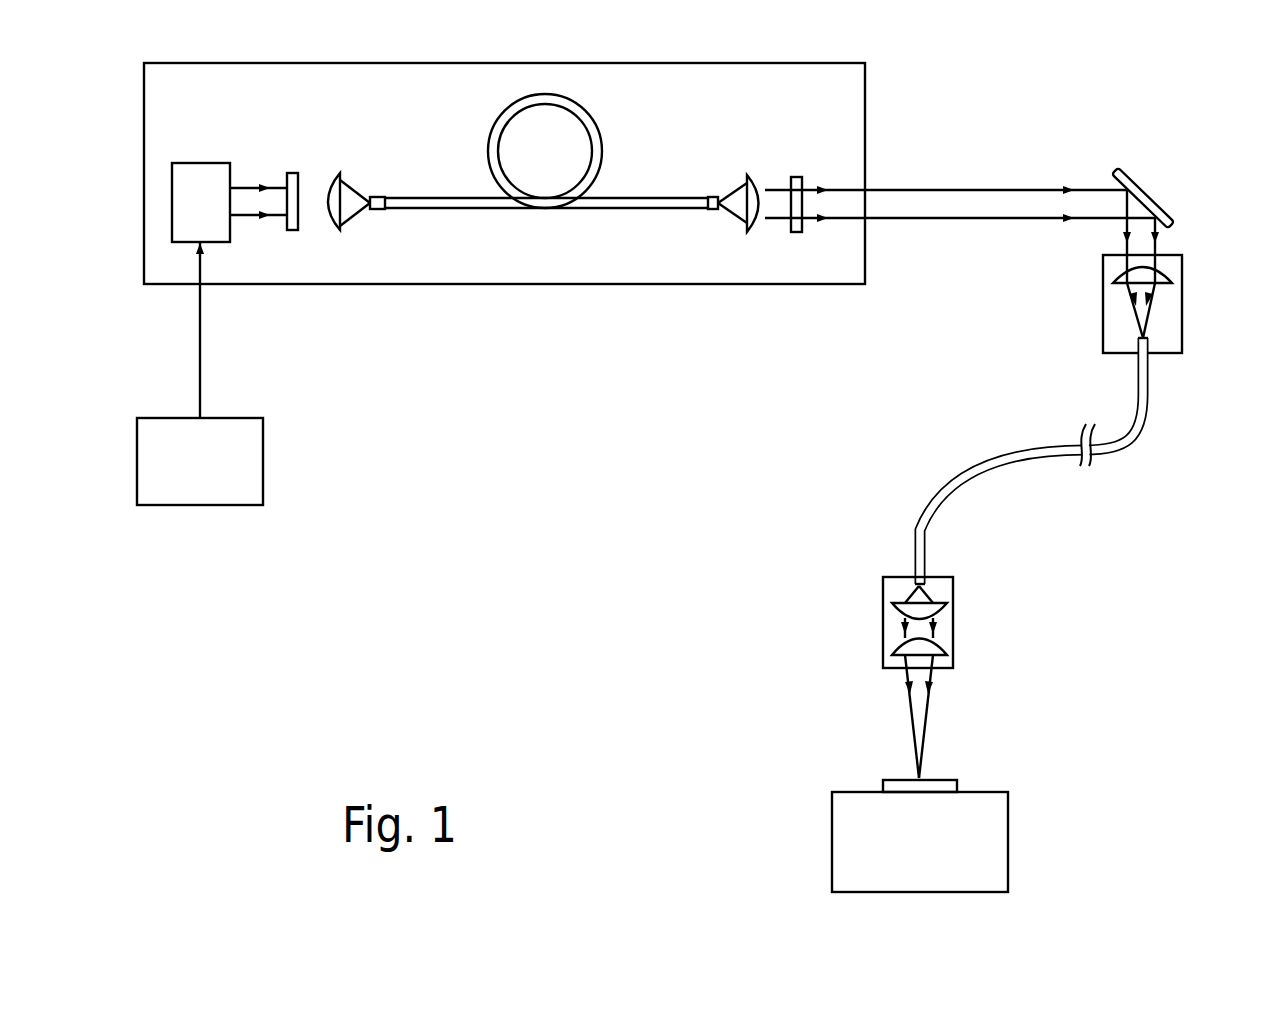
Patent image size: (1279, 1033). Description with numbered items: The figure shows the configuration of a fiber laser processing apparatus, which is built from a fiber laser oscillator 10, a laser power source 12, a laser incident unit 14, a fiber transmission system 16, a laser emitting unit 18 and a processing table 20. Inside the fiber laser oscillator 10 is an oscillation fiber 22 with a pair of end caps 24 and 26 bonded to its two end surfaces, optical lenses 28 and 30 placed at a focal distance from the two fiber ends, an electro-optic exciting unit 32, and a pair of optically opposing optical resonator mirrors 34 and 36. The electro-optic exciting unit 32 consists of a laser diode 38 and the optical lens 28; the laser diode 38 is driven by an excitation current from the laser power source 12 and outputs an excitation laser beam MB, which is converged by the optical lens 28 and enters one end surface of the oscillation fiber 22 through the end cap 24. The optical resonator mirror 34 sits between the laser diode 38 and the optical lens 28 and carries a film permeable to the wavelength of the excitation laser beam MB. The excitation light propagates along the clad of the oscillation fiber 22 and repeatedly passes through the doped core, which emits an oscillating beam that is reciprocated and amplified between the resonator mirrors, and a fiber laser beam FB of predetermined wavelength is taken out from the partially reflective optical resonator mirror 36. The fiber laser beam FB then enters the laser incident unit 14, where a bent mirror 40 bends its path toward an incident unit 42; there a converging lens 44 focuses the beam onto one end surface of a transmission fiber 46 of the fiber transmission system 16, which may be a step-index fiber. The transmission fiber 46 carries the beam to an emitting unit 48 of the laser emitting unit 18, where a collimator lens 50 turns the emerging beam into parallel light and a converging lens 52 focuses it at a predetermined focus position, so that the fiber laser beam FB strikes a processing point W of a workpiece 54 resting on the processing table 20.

The fiber laser oscillator 10 is at (458, 312).
The laser power source 12 is at (263, 462).
The laser incident unit 14 is at (1175, 236).
The fiber transmission system 16 is at (1018, 461).
The laser emitting unit 18 is at (902, 610).
The processing table 20 is at (1008, 855).
The oscillation fiber 22 is at (596, 120).
The end cap 24 is at (378, 211).
The end cap 26 is at (712, 211).
The optical lens 28 is at (339, 173).
The optical lens 30 is at (745, 176).
The electro-optic exciting unit 32 is at (288, 286).
The optical resonator mirror 34 is at (292, 173).
The optical resonator mirror 36 is at (797, 177).
The laser diode 38 is at (200, 163).
The bent mirror 40 is at (1123, 168).
The incident unit 42 is at (1182, 345).
The converging lens 44 is at (1168, 285).
The transmission fiber 46 is at (913, 505).
The emitting unit 48 is at (883, 600).
The collimator lens 50 is at (940, 605).
The converging lens 52 is at (947, 645).
The workpiece 54 is at (890, 779).
The excitation laser beam MB is at (252, 220).
The fiber laser beam FB is at (836, 220).
The processing point W is at (919, 762).